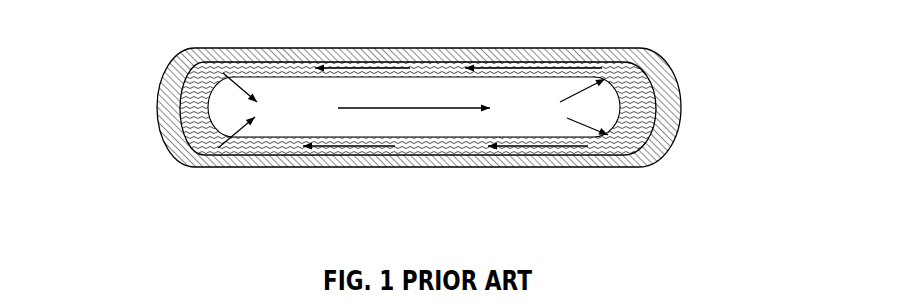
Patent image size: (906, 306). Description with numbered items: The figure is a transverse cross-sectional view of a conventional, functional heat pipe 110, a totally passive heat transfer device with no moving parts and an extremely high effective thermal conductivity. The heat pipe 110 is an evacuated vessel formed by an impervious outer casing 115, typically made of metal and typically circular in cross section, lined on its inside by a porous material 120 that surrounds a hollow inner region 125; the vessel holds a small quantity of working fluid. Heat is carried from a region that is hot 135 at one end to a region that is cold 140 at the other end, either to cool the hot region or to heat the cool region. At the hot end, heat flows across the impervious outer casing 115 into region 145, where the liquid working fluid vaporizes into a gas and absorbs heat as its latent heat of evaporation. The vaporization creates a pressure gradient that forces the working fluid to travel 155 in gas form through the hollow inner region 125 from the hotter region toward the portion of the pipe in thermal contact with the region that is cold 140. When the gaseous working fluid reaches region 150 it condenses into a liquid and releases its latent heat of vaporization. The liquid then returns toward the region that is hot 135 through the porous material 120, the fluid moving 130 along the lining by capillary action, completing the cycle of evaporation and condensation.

The heat pipe 110 is at (422, 125).
The impervious outer casing 115 is at (423, 162).
The porous material 120 is at (387, 63).
The hollow inner region 125 is at (293, 122).
The fluid moving by capillary action 130 is at (497, 70).
The region that is hot 135 is at (113, 78).
The region that is cold 140 is at (730, 90).
The region where liquid working fluid vaporizes 145 is at (232, 119).
The region where working fluid condenses 150 is at (605, 112).
The travel of working fluid in gas form 155 is at (363, 113).